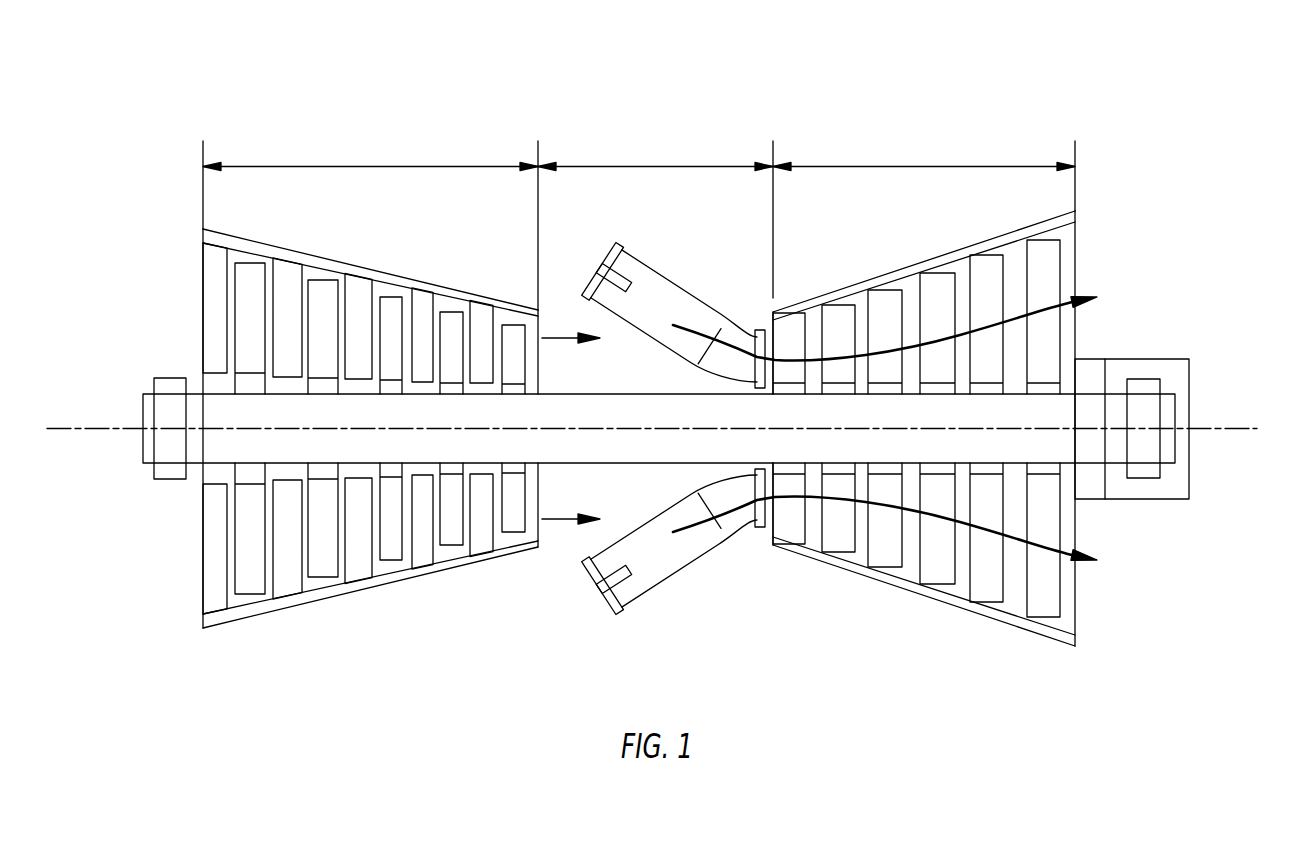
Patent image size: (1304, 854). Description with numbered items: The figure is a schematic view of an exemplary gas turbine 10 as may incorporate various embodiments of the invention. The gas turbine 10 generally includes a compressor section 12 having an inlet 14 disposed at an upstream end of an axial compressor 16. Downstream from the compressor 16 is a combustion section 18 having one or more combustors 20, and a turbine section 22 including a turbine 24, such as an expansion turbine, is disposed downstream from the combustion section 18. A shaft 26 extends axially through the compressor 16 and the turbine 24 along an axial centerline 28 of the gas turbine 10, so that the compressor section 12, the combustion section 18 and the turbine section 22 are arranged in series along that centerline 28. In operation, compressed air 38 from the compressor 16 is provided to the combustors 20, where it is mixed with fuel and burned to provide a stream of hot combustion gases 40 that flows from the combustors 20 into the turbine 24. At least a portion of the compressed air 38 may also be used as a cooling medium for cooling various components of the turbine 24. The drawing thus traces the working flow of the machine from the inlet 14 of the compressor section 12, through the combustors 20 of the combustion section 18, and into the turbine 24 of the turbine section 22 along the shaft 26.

The gas turbine 10 is at (564, 71).
The compressor section 12 is at (373, 165).
The inlet 14 is at (203, 323).
The axial compressor 16 is at (222, 642).
The combustion section 18 is at (615, 165).
The combustor 20 is at (640, 255).
The turbine section 22 is at (862, 165).
The turbine 24 is at (895, 602).
The shaft 26 is at (570, 407).
The axial centerline 28 is at (97, 426).
The compressed air 38 is at (553, 338).
The hot combustion gases 40 is at (1035, 313).